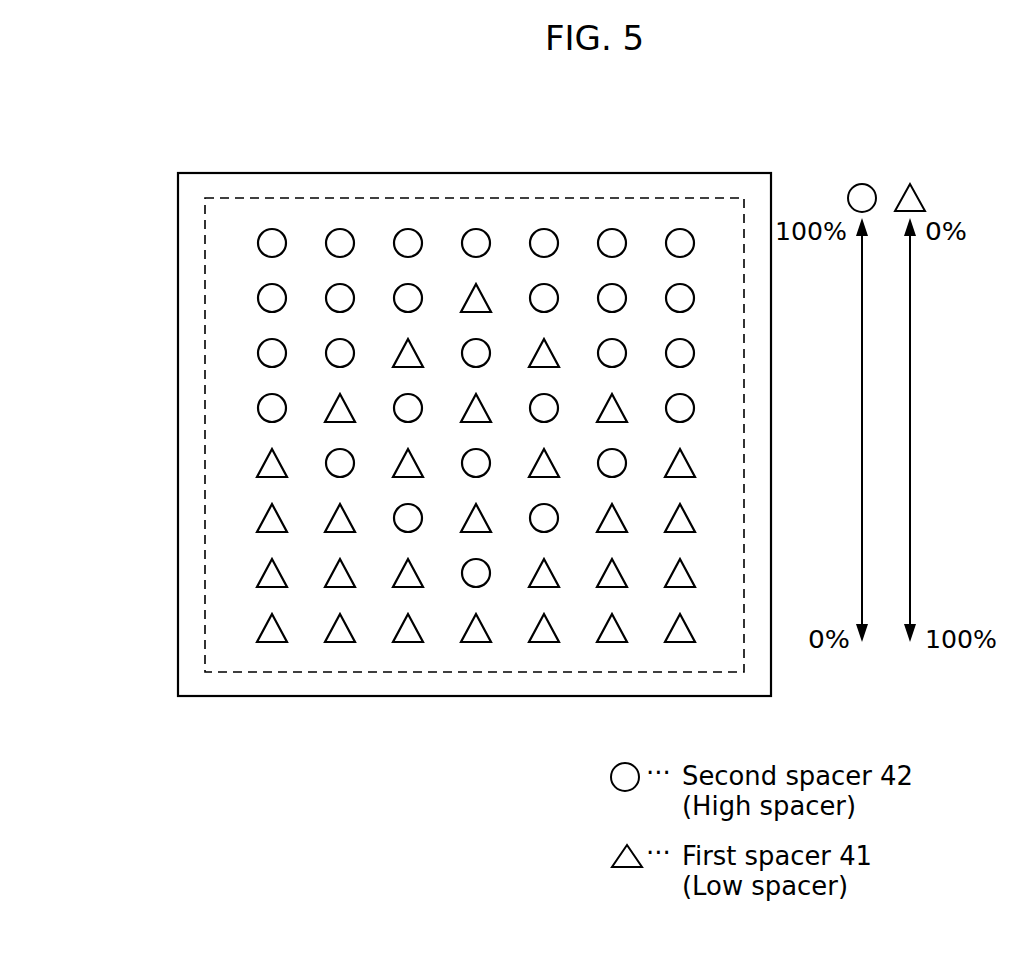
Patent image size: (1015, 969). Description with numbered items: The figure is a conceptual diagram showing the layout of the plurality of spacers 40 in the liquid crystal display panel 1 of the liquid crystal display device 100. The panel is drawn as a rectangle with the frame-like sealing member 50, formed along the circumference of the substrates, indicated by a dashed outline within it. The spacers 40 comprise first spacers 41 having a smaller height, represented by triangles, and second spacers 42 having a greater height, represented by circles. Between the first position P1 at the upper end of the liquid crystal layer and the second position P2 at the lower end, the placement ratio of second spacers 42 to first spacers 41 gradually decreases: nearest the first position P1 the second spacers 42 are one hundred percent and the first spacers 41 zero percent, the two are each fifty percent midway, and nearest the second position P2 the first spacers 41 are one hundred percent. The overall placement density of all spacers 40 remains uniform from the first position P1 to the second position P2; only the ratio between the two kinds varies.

The liquid crystal display panel 1 is at (226, 164).
The liquid crystal display device 100 is at (789, 142).
The sealing member 50 is at (430, 188).
The spacers 40 is at (101, 407).
The first spacer 41 is at (268, 628).
The second spacer 42 is at (266, 406).
The first position P1 is at (192, 199).
The second position P2 is at (192, 672).